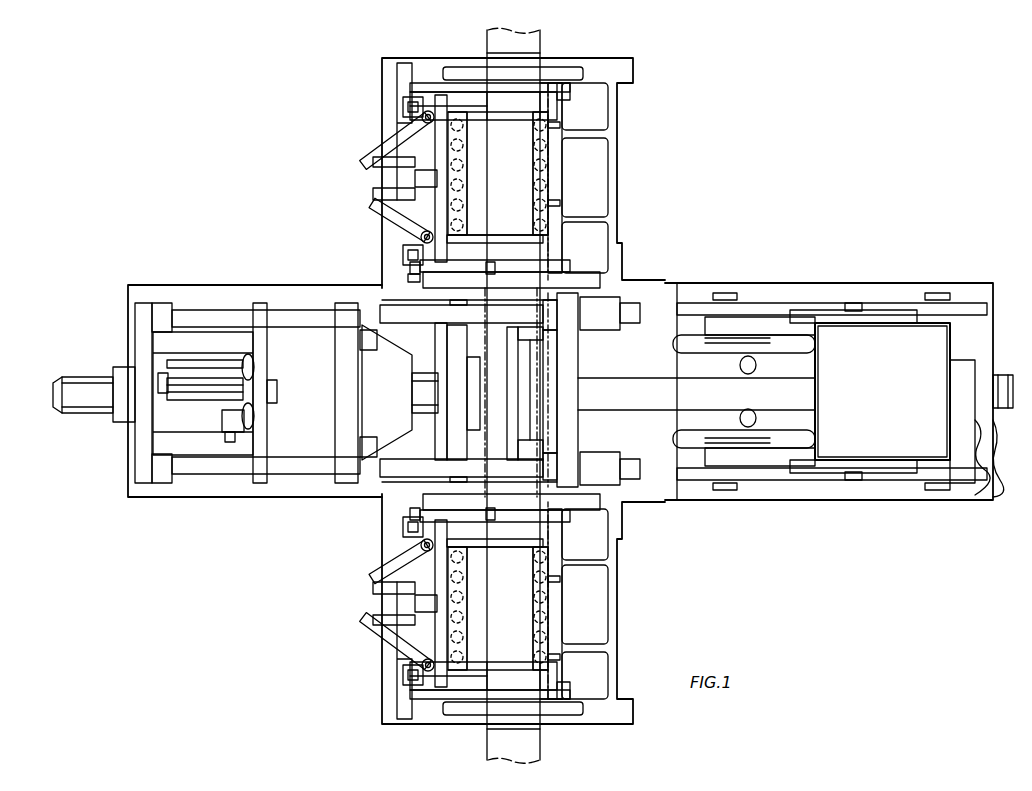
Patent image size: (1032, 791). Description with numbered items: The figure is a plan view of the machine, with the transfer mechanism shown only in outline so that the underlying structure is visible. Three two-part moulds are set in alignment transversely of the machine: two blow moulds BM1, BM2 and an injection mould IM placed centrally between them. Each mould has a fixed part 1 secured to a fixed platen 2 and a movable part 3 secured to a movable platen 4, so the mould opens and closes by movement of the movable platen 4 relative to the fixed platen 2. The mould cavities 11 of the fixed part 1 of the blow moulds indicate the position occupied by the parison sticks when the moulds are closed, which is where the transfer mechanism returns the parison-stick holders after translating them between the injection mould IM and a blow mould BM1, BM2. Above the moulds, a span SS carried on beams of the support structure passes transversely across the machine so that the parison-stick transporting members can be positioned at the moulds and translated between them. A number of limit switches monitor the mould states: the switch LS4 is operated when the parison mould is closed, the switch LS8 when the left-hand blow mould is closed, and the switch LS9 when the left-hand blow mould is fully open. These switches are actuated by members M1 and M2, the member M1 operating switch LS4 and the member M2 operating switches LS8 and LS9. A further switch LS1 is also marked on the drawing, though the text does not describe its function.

The span SS is at (542, 50).
The blow mould BM1 is at (425, 150).
The blow mould BM2 is at (425, 642).
The switch-operating member M1 is at (237, 412).
The switch-operating member M2 is at (410, 267).
The injection mould IM is at (442, 345).
The limit switch LS1 is at (169, 397).
The limit switch LS4 is at (236, 436).
The limit switch LS8 is at (493, 266).
The limit switch LS9 is at (410, 280).
The fixed part 1 is at (549, 186).
The fixed platen 2 is at (552, 160).
The movable part 3 is at (462, 198).
The movable platen 4 is at (438, 212).
The mould cavities 11 is at (498, 391).